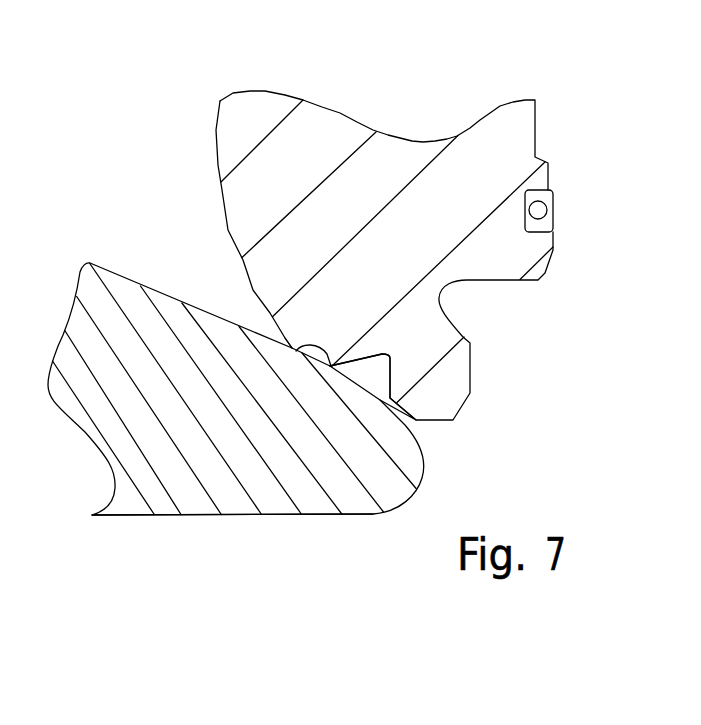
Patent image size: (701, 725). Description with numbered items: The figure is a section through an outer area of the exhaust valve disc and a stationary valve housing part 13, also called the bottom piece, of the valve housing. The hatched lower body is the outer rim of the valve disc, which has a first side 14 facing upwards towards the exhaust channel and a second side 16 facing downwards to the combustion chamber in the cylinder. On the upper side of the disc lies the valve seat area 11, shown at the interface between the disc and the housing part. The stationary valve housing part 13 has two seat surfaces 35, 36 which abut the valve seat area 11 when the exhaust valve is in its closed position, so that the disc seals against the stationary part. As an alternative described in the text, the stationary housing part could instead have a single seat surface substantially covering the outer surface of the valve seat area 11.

The valve seat area 11 is at (356, 383).
The stationary part of the valve housing 13 is at (428, 310).
The first side of the valve disc 14 is at (131, 282).
The second side of the valve disc 16 is at (142, 516).
The seat surface 35 is at (292, 348).
The seat surface 36 is at (330, 366).